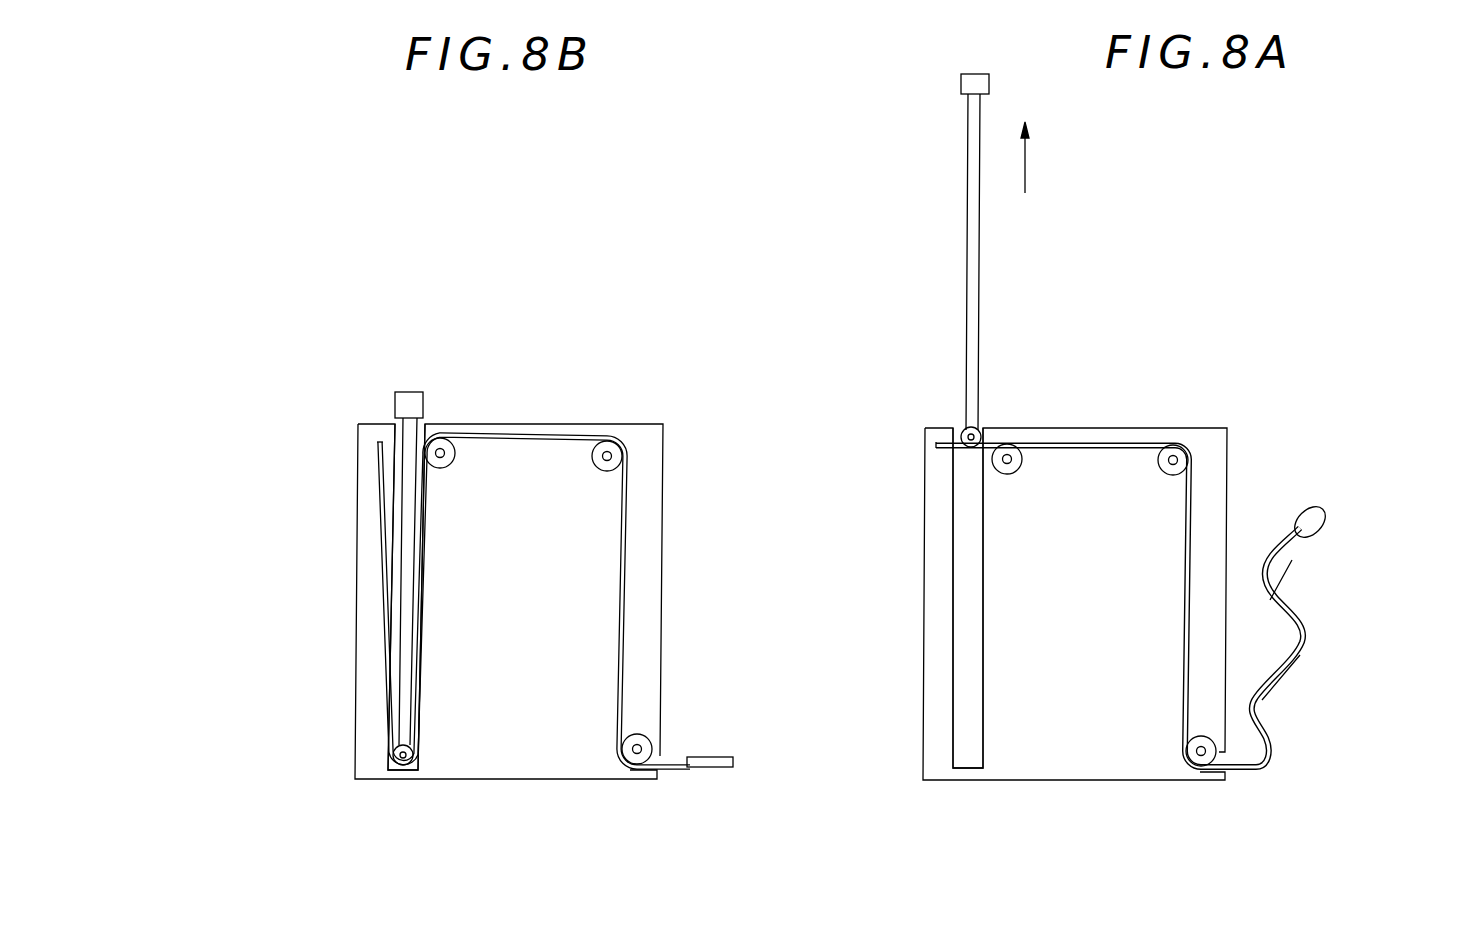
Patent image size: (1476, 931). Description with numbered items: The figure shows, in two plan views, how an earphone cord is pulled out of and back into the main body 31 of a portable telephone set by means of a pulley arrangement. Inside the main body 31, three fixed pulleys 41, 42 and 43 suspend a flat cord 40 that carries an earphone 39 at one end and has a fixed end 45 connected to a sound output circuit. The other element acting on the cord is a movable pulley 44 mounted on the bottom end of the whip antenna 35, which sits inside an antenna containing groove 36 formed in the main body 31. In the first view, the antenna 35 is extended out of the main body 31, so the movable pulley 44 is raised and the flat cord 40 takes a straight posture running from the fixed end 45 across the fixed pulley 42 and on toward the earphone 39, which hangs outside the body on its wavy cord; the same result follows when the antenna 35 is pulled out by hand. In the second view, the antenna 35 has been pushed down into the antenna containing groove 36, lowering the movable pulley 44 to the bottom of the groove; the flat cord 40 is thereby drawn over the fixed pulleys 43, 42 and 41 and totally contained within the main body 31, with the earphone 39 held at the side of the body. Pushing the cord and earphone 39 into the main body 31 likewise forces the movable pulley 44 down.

In FIG. 8B, the main body 31 is at (663, 485).
In FIG. 8B, the whip antenna 35 is at (407, 392).
In FIG. 8A, the whip antenna 35 is at (970, 288).
In FIG. 8B, the antenna containing groove 36 is at (400, 566).
In FIG. 8A, the antenna containing groove 36 is at (958, 598).
In FIG. 8B, the earphone 39 is at (693, 768).
In FIG. 8A, the earphone 39 is at (1300, 503).
In FIG. 8B, the flat cord 40 is at (625, 595).
In FIG. 8A, the flat cord 40 is at (1298, 665).
In FIG. 8B, the fixed pulley 41 is at (632, 765).
In FIG. 8A, the fixed pulley 41 is at (1200, 768).
In FIG. 8B, the fixed pulley 42 is at (603, 443).
In FIG. 8A, the fixed pulley 42 is at (1175, 446).
In FIG. 8B, the fixed pulley 43 is at (441, 438).
In FIG. 8A, the fixed pulley 43 is at (1010, 445).
In FIG. 8B, the movable pulley 44 is at (403, 766).
In FIG. 8A, the movable pulley 44 is at (978, 428).
In FIG. 8B, the fixed end 45 is at (377, 442).
In FIG. 8A, the fixed end 45 is at (937, 447).